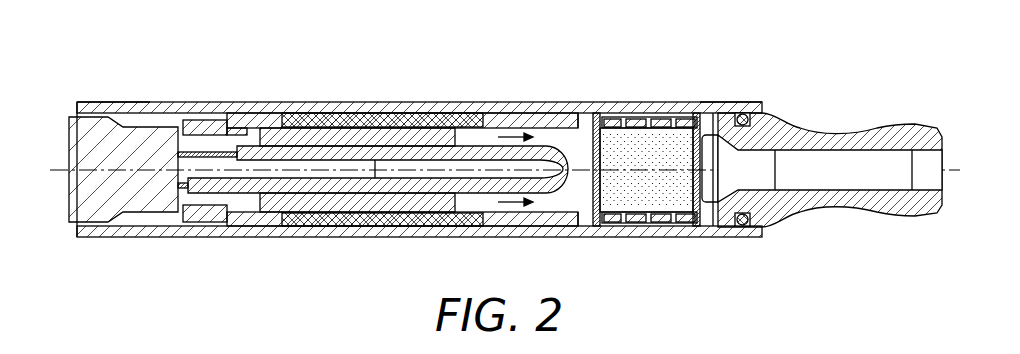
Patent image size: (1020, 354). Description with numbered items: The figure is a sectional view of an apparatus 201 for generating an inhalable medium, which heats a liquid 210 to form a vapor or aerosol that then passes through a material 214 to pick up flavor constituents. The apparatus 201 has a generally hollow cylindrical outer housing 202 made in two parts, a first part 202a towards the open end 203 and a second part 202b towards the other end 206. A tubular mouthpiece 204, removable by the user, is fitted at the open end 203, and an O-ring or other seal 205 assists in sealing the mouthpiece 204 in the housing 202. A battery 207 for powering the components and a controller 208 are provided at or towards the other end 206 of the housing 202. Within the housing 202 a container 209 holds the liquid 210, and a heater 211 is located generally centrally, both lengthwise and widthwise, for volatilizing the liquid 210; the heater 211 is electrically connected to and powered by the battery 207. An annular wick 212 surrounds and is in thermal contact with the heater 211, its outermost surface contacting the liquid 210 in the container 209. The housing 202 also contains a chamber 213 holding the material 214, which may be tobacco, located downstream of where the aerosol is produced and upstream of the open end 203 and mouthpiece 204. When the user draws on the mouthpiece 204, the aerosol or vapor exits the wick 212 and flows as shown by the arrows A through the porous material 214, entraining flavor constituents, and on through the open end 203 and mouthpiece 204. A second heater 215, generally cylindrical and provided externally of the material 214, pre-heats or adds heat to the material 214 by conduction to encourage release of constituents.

The apparatus 201 is at (501, 155).
The outer housing 202 is at (423, 145).
The first part of housing 202a is at (741, 102).
The second part of housing 202b is at (124, 102).
The open end 203 is at (822, 176).
The mouthpiece 204 is at (871, 128).
The seal 205 is at (743, 227).
The other end 206 is at (70, 244).
The battery 207 is at (140, 200).
The controller 208 is at (207, 212).
The container 209 is at (385, 113).
The liquid 210 is at (447, 118).
The heater 211 is at (302, 187).
The annular wick 212 is at (320, 138).
The chamber 213 is at (620, 212).
The material 214 is at (678, 195).
The second heater 215 is at (612, 122).
The arrows A is at (517, 110).